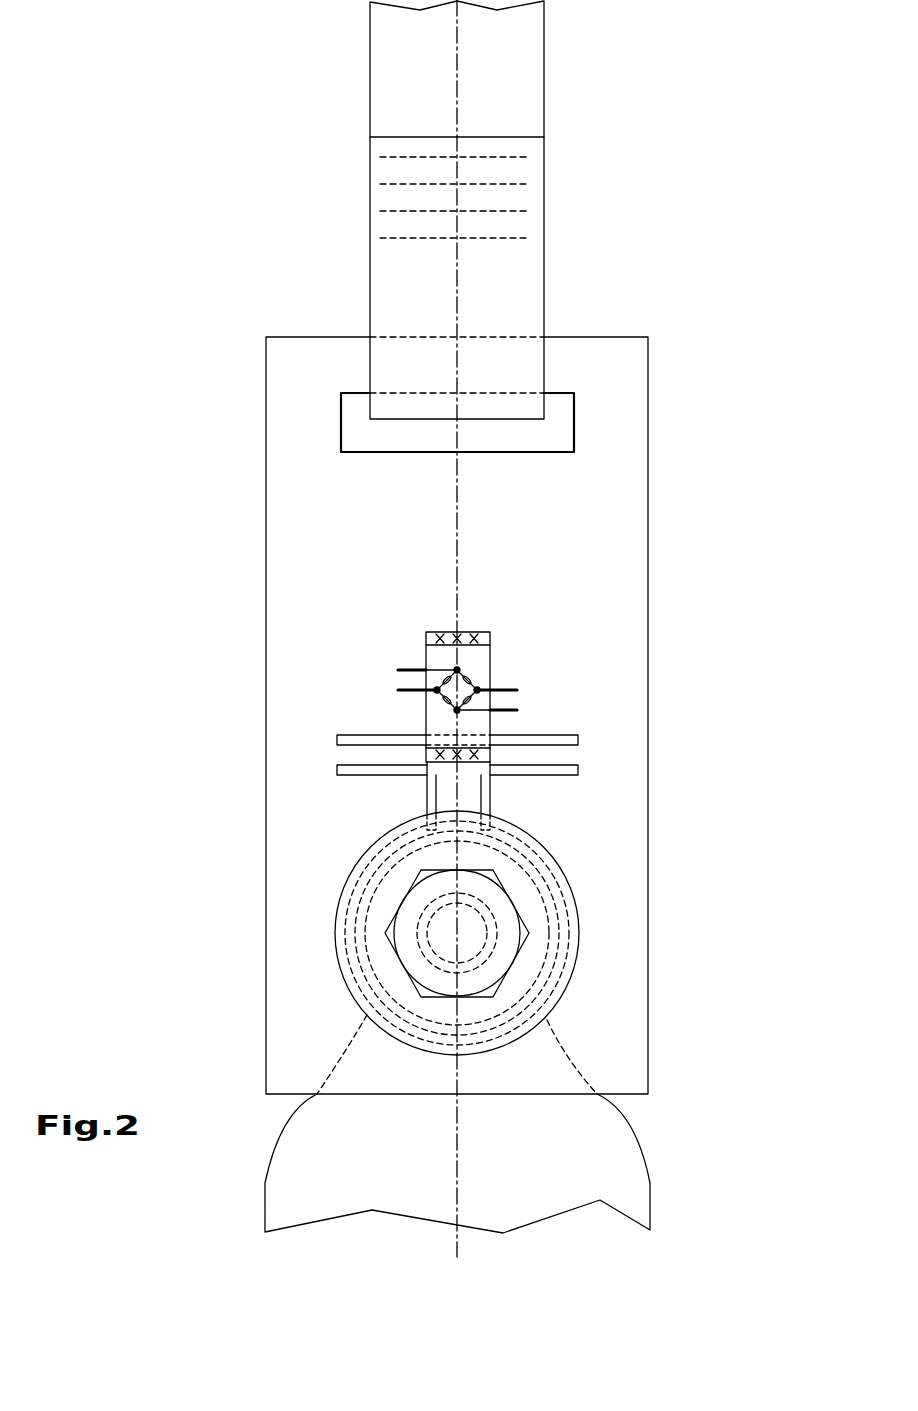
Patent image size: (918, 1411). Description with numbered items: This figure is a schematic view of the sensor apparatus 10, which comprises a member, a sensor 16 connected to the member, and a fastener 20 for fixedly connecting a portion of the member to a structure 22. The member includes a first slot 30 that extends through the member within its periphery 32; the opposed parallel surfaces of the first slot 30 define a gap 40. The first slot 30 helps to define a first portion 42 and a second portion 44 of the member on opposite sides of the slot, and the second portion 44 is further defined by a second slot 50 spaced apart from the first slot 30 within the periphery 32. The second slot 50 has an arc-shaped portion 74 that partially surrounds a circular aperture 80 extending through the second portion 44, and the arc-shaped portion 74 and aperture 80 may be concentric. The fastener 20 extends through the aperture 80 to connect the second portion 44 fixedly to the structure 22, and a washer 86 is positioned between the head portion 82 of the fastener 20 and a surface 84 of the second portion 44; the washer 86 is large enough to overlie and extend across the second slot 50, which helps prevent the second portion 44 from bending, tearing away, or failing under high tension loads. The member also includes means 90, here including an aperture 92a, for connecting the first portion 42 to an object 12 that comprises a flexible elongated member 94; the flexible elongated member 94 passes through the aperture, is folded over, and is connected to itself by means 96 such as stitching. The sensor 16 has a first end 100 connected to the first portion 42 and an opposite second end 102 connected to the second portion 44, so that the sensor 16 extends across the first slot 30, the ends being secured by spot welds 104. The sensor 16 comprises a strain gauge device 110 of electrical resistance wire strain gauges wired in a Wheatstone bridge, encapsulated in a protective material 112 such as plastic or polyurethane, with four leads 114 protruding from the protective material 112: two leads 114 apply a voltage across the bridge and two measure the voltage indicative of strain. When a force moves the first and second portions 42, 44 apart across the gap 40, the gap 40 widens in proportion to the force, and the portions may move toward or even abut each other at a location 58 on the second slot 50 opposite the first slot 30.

The sensor apparatus 10 is at (170, 644).
The object 12 is at (512, 118).
The sensor 16 is at (480, 662).
The fastener 20 is at (407, 937).
The structure 22 is at (600, 1168).
The first slot 30 is at (340, 740).
The periphery 32 is at (283, 598).
The gap 40 is at (570, 740).
The first portion 42 is at (420, 563).
The second portion 44 is at (520, 885).
The second slot 50 is at (355, 905).
The location 58 is at (443, 1045).
The arc-shaped portion 74 is at (570, 896).
The aperture 80 is at (495, 957).
The head portion 82 is at (487, 975).
The surface 84 is at (538, 943).
The washer 86 is at (550, 857).
The means for connecting 90 is at (355, 430).
The collar flange 92a is at (563, 435).
The flexible elongated member 94 is at (407, 92).
The means 96 is at (498, 238).
The first end 100 is at (492, 633).
The second end 102 is at (440, 765).
The spot welds 104 is at (465, 640).
The strain gauge device 110 is at (448, 672).
The protective material 112 is at (483, 675).
The leads 114 is at (398, 690).